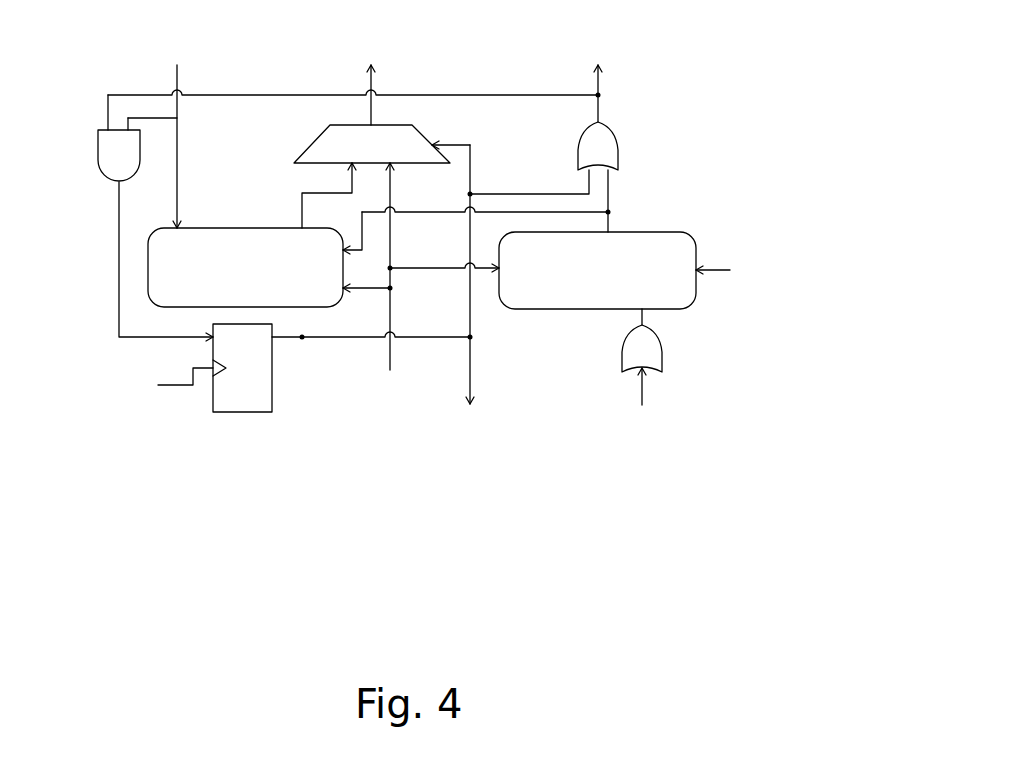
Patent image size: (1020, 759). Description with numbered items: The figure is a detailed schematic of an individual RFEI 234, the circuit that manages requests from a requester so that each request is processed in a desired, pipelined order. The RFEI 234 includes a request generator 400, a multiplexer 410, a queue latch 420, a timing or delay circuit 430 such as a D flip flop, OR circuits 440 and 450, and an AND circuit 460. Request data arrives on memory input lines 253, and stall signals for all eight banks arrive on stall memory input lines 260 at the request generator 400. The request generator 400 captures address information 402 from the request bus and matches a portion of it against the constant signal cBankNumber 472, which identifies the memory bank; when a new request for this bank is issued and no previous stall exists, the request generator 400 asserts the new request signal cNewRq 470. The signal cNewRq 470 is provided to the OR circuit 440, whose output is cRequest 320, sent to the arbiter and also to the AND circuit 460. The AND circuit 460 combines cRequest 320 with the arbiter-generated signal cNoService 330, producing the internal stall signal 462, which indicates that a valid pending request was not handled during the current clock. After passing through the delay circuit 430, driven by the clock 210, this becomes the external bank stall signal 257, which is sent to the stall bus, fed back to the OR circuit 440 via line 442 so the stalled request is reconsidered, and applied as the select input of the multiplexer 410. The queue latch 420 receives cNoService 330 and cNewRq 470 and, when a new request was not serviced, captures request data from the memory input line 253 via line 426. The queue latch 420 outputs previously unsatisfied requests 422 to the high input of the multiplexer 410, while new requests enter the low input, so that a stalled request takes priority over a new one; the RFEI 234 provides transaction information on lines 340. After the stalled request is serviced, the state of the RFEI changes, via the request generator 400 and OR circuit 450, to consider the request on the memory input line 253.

The RFEI 234 is at (793, 130).
The cNoService signal 330 is at (177, 121).
The transaction information lines 340 is at (372, 66).
The cRequest signal 320 is at (598, 69).
The AND circuit 460 is at (102, 138).
The c req IntStall signal 462 is at (134, 261).
The multiplexer 410 is at (328, 144).
The previously unsatisfied requests 422 is at (300, 209).
The memory input lines 253 is at (373, 300).
The c req IntStall[Bank] signal 257 is at (505, 306).
The cNewRq signal 470 is at (537, 212).
The address information 402 is at (444, 258).
The line 426 is at (366, 280).
The line 442 is at (529, 183).
The OR circuit 440 is at (632, 146).
The queue latch 420 is at (245, 267).
The request generator 400 is at (597, 270).
The cBankNumber constant signal 472 is at (777, 258).
The OR circuit 450 is at (672, 340).
The stall memory input lines 260 is at (667, 415).
The delay circuit 430 is at (340, 385).
The gClk clock signal 210 is at (134, 383).